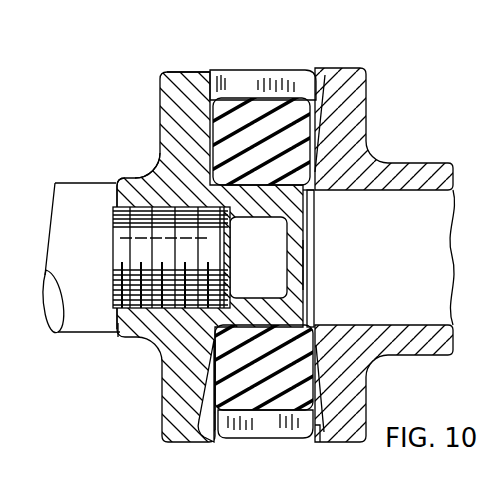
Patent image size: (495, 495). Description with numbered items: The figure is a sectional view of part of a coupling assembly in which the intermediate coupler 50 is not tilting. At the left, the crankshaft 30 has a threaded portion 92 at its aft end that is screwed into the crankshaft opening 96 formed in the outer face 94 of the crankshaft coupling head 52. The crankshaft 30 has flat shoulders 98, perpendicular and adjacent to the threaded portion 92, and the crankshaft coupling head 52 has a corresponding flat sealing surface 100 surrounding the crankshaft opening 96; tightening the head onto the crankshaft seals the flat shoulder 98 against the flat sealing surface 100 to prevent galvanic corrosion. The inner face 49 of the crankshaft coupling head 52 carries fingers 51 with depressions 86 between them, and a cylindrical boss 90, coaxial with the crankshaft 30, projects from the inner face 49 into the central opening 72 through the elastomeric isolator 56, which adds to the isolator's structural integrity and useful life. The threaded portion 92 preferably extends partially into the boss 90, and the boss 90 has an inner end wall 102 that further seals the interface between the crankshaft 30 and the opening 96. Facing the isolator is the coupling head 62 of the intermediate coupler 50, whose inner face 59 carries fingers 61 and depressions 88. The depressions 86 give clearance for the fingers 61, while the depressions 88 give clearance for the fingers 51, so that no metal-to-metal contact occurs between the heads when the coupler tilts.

The crankshaft 30 is at (82, 320).
The inner face 49 is at (212, 382).
The intermediate coupler 50 is at (362, 259).
The fingers 51 is at (230, 80).
The crankshaft coupling head 52 is at (182, 78).
The elastomeric isolator 56 is at (245, 102).
The inner face 59 is at (317, 428).
The fingers 61 is at (280, 423).
The coupling head 62 is at (352, 75).
The central opening 72 is at (305, 200).
The depressions 86 is at (210, 443).
The depressions 88 is at (324, 78).
The cylindrical boss 90 is at (300, 268).
The threaded portion 92 is at (164, 223).
The outer face 94 is at (160, 153).
The crankshaft opening 96 is at (147, 200).
The flat shoulders 98 is at (115, 203).
The flat sealing surface 100 is at (118, 195).
The inner end wall 102 is at (310, 298).